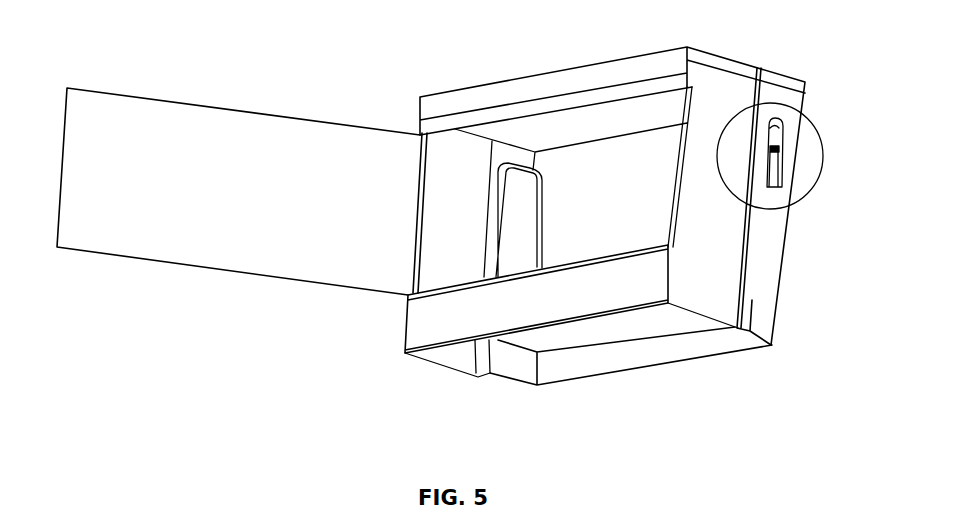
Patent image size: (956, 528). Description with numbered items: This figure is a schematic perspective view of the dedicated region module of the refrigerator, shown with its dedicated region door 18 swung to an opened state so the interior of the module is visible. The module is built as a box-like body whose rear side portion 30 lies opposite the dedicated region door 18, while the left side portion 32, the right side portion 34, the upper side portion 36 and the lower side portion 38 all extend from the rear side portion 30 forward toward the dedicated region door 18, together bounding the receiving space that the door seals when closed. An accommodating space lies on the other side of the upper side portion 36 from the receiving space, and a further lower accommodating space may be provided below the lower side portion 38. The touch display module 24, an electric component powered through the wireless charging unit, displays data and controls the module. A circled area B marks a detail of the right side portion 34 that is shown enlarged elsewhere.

The dedicated region door 18 is at (183, 143).
The touch display module 24 is at (525, 305).
The rear side portion 30 is at (572, 170).
The left side portion 32 is at (445, 188).
The right side portion 34 is at (727, 242).
The upper side portion 36 is at (585, 122).
The lower side portion 38 is at (613, 328).
The detail B is at (802, 197).